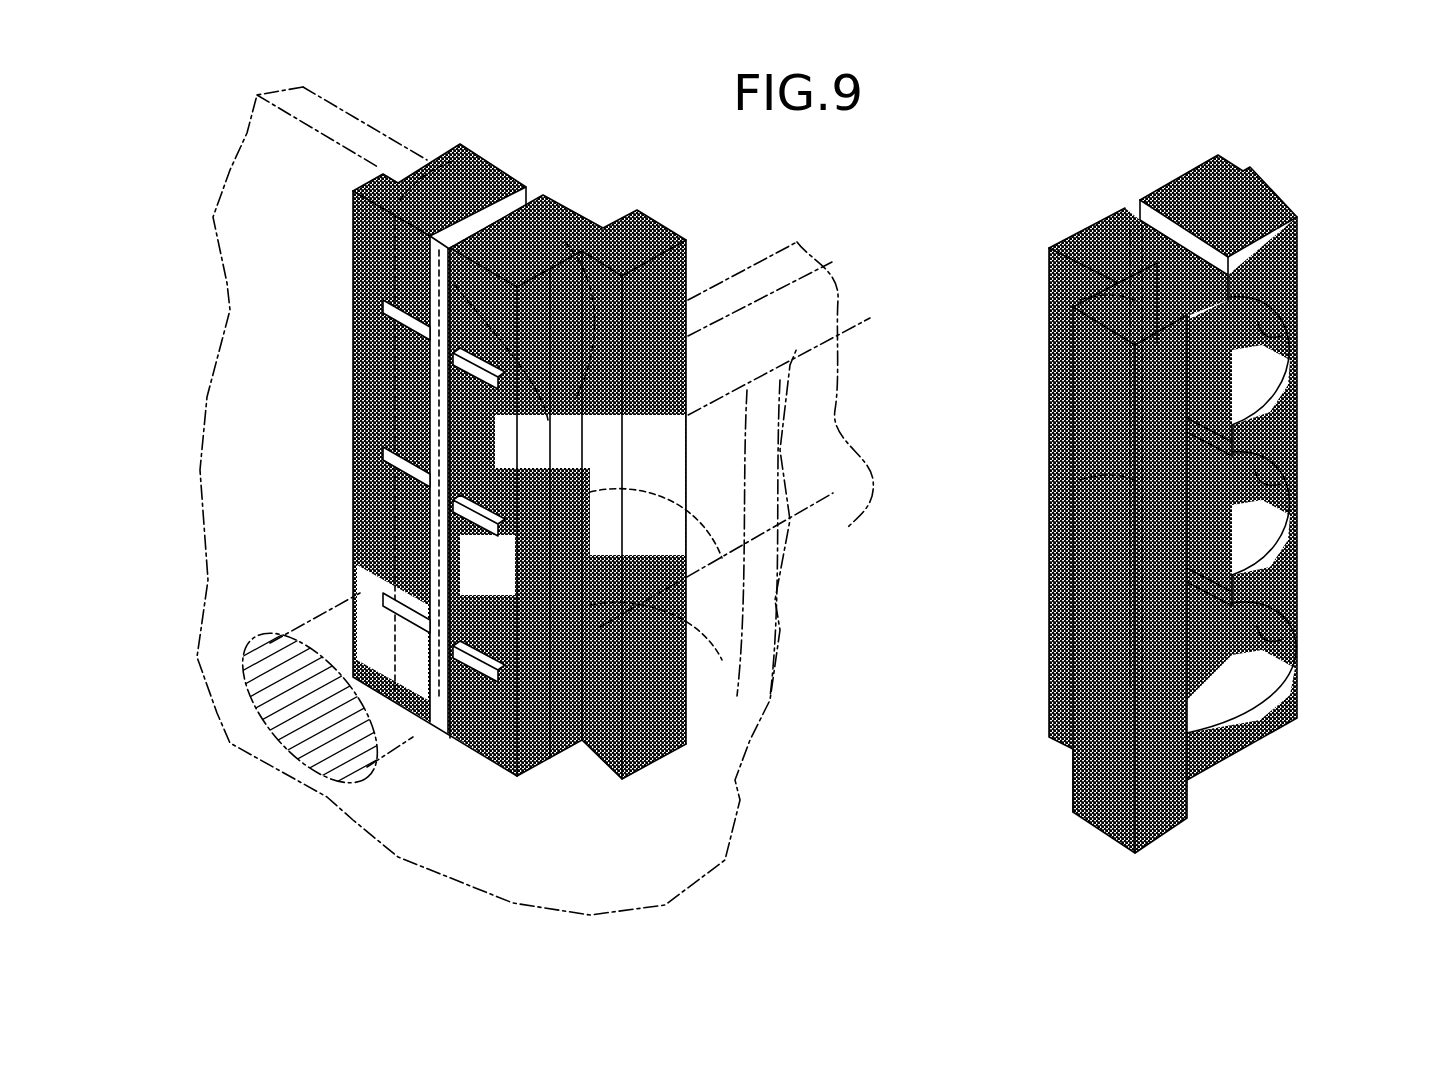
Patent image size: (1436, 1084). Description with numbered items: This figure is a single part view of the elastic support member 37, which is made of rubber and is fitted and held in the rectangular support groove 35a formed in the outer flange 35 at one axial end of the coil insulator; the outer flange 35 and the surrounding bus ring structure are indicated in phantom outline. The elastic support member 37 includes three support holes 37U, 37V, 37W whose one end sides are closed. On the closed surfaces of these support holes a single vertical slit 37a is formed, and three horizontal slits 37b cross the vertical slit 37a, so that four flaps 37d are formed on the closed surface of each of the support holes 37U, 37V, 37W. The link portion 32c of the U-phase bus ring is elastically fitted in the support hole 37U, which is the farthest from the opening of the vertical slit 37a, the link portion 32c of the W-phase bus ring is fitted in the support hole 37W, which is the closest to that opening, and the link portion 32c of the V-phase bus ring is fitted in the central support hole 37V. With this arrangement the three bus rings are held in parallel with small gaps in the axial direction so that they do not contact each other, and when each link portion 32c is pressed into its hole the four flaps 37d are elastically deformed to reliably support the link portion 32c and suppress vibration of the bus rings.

The outer flange 35 is at (226, 284).
The rectangular support groove 35a is at (472, 178).
The elastic support member 37 is at (700, 264).
The support hole 37W is at (567, 240).
The support hole 37V is at (690, 545).
The support hole 37U is at (690, 640).
The vertical slit 37a is at (438, 430).
The horizontal slit 37b is at (472, 362).
The flap 37d is at (458, 378).
The link portion 32c is at (847, 528).